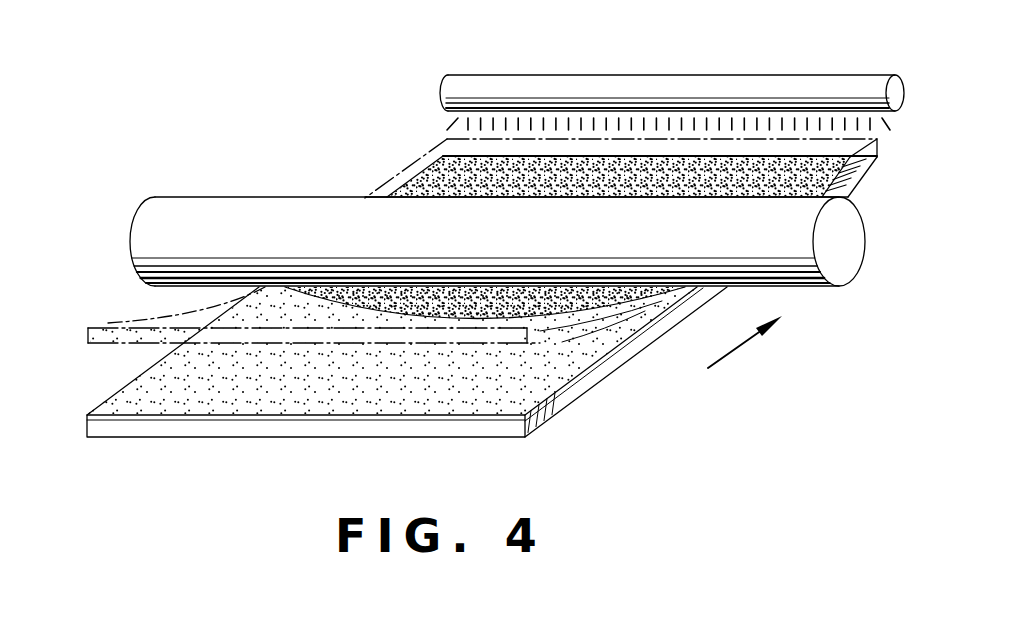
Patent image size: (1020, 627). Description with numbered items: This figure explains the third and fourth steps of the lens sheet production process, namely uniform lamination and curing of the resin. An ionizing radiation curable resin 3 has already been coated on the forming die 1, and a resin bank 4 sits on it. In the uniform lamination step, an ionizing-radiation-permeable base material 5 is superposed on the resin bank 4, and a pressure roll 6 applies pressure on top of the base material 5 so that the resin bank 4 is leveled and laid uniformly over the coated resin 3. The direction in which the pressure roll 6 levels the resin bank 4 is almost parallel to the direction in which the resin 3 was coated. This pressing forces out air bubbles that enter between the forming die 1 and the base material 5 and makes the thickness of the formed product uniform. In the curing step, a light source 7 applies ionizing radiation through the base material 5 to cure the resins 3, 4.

The forming die 1 is at (566, 398).
The ionizing radiation curable resin 3 is at (162, 382).
The resin bank 4 is at (440, 176).
The ionizing-radiation-permeable base material 5 is at (109, 333).
The pressure roll 6 is at (232, 215).
The light source 7 is at (685, 90).